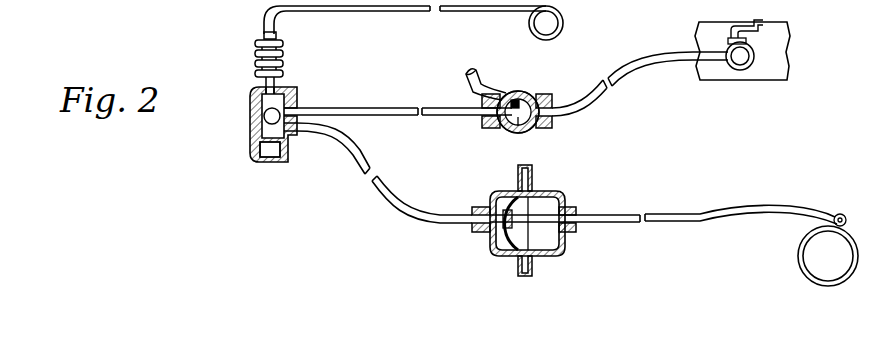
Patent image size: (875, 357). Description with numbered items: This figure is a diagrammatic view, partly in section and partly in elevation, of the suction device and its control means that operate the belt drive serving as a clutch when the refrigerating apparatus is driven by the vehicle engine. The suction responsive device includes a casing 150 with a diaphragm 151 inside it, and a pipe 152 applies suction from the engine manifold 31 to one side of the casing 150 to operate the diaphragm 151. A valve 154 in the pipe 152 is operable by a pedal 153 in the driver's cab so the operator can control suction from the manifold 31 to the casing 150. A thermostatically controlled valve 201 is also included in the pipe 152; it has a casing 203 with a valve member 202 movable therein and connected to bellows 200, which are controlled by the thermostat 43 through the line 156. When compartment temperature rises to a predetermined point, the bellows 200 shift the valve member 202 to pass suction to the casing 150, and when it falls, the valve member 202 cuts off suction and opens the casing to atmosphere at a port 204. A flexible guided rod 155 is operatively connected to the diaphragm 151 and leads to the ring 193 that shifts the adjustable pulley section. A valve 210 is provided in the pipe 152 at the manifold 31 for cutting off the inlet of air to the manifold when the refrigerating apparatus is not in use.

The manifold 31 is at (778, 80).
The thermostat 43 is at (563, 23).
The casing 150 is at (541, 200).
The diaphragm 151 is at (530, 258).
The pipe 152 is at (362, 112).
The pedal 153 is at (467, 80).
The valve 154 is at (529, 93).
The flexible guided rod 155 is at (617, 212).
The line 156 is at (386, 13).
The pull ring 193 is at (799, 263).
The bellows 200 is at (282, 72).
The thermostatically controlled valve 201 is at (245, 144).
The valve member 202 is at (266, 119).
The casing 203 is at (268, 162).
The port 204 is at (290, 145).
The valve 210 is at (757, 26).